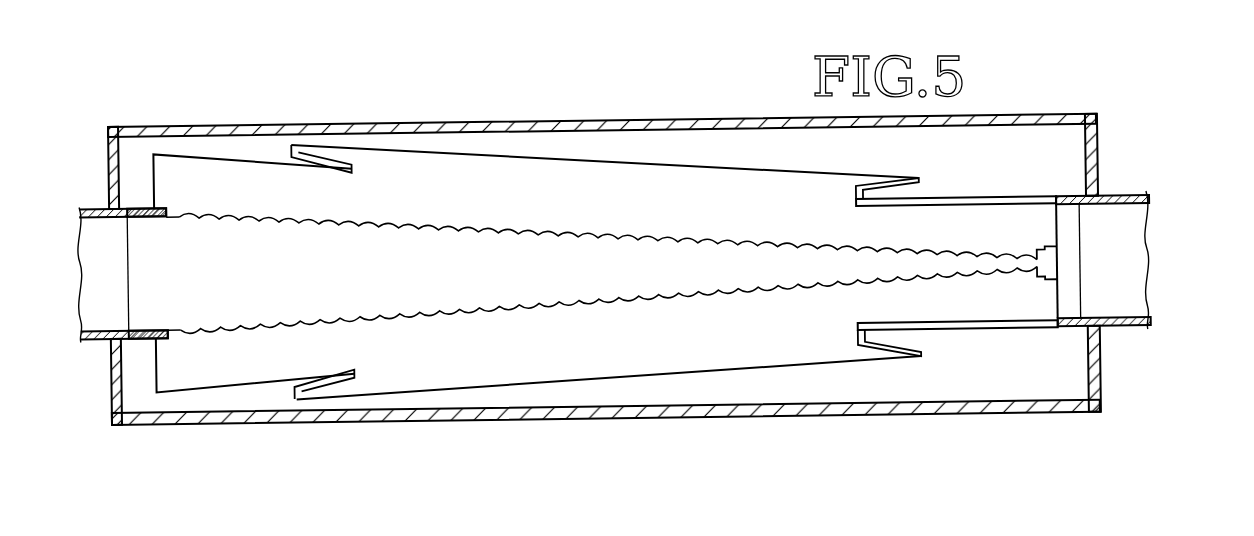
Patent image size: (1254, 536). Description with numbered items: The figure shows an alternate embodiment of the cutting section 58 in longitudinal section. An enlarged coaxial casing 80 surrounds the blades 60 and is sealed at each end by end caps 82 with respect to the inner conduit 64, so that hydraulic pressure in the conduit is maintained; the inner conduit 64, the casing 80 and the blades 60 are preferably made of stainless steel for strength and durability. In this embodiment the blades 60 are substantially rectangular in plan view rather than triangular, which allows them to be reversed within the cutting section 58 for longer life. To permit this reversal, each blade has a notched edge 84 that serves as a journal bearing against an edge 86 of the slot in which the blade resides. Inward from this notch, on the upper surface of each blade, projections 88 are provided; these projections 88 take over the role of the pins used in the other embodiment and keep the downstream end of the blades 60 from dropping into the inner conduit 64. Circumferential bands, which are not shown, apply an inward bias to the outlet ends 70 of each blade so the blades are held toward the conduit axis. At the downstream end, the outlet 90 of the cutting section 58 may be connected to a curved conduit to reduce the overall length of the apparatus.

The cutting section 58 is at (652, 88).
The coaxial casing 80 is at (723, 119).
The end caps 82 is at (109, 163).
The edge of the slot 86 is at (167, 220).
The blades 60 is at (556, 198).
The projections 88 is at (350, 155).
The notched edge 84 is at (1040, 273).
The inner conduit 64 is at (1127, 193).
The outlet 90 is at (1150, 200).
The outlet ends 70 is at (1057, 233).